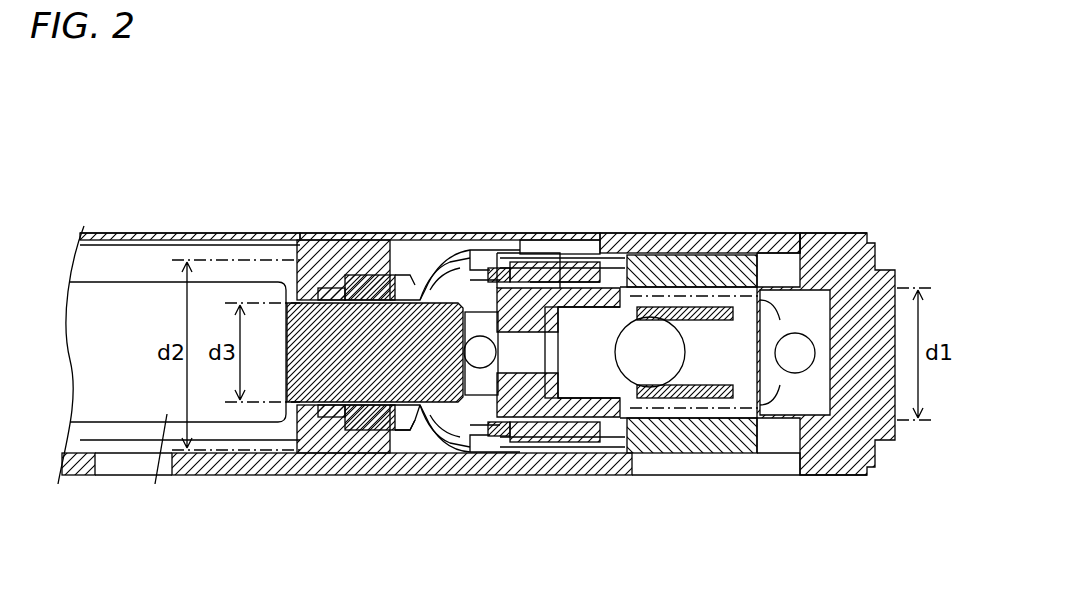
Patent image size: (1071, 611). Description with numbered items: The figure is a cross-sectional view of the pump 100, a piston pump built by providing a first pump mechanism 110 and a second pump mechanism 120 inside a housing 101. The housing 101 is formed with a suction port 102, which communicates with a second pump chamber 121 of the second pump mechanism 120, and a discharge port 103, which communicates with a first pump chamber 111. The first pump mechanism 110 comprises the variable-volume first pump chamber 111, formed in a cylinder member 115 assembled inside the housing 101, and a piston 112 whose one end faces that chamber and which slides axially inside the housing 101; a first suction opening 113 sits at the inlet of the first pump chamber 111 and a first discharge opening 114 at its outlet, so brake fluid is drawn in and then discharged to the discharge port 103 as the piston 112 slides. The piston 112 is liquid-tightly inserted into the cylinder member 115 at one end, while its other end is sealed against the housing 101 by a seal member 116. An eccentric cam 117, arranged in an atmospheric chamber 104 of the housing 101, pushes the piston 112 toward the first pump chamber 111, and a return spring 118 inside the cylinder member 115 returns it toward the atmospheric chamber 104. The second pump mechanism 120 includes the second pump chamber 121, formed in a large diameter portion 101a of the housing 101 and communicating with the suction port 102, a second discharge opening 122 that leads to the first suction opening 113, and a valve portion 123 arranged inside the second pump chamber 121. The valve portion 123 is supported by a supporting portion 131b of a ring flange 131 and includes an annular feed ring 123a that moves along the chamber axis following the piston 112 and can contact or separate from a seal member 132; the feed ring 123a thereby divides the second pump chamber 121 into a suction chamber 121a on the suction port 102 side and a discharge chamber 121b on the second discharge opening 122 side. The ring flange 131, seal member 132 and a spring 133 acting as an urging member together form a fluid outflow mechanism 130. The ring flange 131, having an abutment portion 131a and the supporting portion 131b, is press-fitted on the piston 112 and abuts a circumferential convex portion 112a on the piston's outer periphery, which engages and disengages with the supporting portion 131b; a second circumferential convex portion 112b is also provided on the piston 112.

The pump 100 is at (172, 161).
The housing 101 is at (383, 233).
The large diameter portion 101a is at (412, 233).
The suction port 102 is at (580, 233).
The discharge port 103 is at (755, 233).
The atmospheric chamber 104 is at (128, 268).
The first pump mechanism 110 is at (666, 233).
The first pump chamber 111 is at (742, 366).
The piston 112 is at (305, 233).
The circumferential convex portion 112a is at (457, 233).
The second circumferential convex portion 112b is at (395, 233).
The first suction opening 113 is at (608, 430).
The first discharge opening 114 is at (785, 450).
The cylinder member 115 is at (725, 440).
The seal member 116 is at (340, 470).
The eccentric cam 117 is at (165, 420).
The return spring 118 is at (648, 475).
The second pump mechanism 120 is at (540, 233).
The second pump chamber 121 is at (515, 233).
The suction chamber 121a is at (547, 440).
The discharge chamber 121b is at (360, 428).
The second discharge opening 122 is at (453, 233).
The valve portion 123 is at (505, 233).
The feed ring 123a is at (480, 233).
The fluid outflow mechanism 130 is at (505, 425).
The ring flange 131 is at (400, 455).
The abutment portion 131a is at (440, 440).
The supporting portion 131b is at (480, 440).
The seal member 132 is at (517, 445).
The spring 133 is at (596, 452).